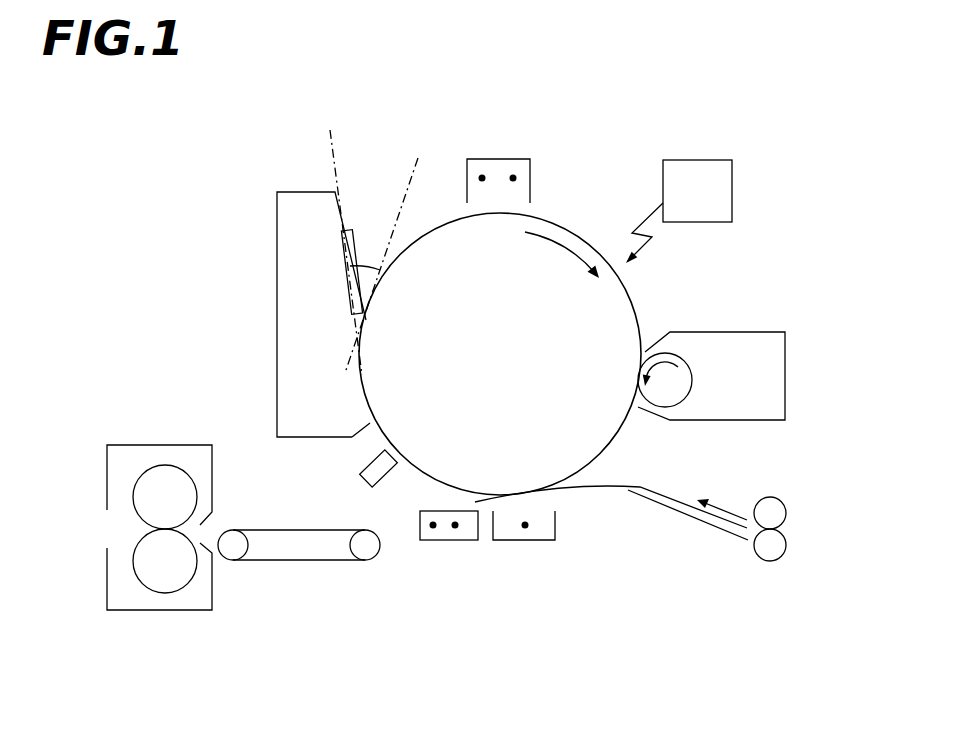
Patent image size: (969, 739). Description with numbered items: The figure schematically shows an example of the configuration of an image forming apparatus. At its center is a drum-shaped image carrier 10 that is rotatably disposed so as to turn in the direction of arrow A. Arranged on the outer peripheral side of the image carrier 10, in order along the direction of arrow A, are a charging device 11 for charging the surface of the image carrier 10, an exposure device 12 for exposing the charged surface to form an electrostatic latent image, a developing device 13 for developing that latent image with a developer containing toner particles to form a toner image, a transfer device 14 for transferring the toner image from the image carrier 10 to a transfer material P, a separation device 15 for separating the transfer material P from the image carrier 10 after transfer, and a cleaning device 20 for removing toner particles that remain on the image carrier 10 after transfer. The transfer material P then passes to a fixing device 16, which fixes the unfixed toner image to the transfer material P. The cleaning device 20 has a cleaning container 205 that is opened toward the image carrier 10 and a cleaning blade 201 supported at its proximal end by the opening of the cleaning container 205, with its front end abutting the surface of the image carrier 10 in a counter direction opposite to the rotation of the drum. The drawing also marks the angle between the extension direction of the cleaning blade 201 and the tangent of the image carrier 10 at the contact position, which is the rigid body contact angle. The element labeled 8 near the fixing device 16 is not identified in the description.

The image carrier 10 is at (381, 434).
The charging device 11 is at (507, 158).
The exposure device 12 is at (700, 160).
The developing device 13 is at (749, 332).
The transfer device 14 is at (543, 543).
The separation device 15 is at (448, 542).
The fixing device 16 is at (236, 499).
The sheet discharge 8 is at (147, 529).
The cleaning device 20 is at (265, 283).
The cleaning blade 201 is at (347, 277).
The cleaning container 205 is at (277, 246).
The arrow A is at (562, 255).
The transfer material P is at (670, 493).